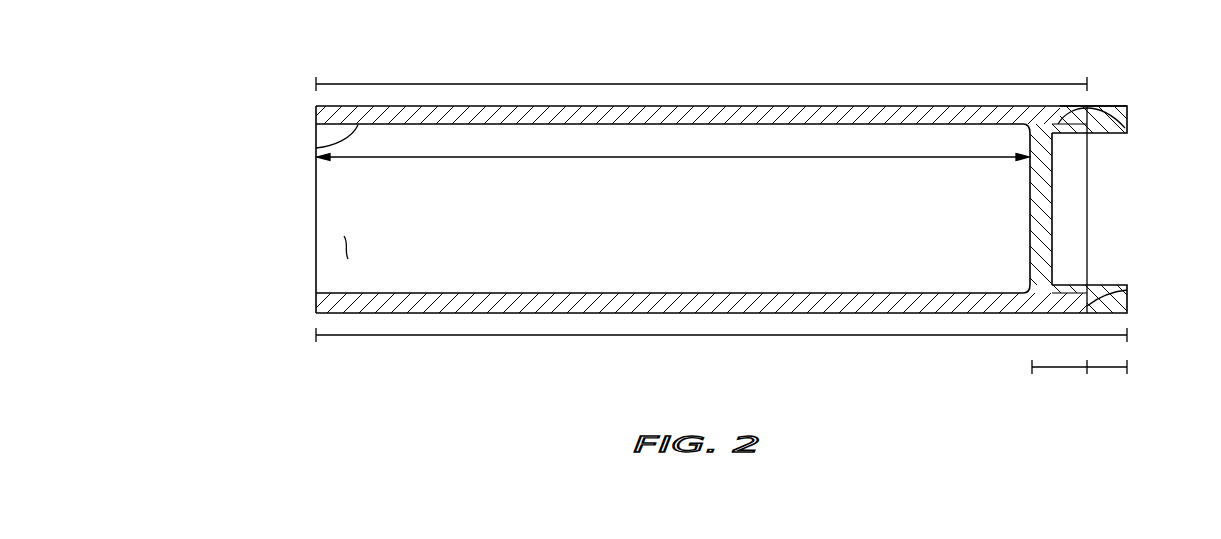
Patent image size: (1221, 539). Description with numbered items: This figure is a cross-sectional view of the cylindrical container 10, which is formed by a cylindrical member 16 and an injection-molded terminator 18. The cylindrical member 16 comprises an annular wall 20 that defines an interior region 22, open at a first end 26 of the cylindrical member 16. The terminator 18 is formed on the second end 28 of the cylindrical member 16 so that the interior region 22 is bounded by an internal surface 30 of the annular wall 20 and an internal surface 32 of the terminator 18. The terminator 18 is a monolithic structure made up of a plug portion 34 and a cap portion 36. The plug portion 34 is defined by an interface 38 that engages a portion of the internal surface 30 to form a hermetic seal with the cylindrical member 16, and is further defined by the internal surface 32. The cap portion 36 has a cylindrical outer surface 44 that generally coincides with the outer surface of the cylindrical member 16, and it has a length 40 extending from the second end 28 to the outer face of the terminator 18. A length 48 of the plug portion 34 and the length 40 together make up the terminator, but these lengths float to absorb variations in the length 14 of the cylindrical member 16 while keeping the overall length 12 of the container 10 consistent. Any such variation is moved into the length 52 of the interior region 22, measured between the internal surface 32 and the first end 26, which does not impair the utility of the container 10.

The cylindrical container 10 is at (705, 215).
The length of the container 12 is at (828, 336).
The length of the cylindrical member 14 is at (765, 84).
The cylindrical member 16 is at (304, 106).
The terminator 18 is at (1090, 215).
The annular wall 20 is at (316, 148).
The interior region 22 is at (342, 192).
The first end 26 is at (296, 315).
The second end 28 is at (1100, 86).
The internal surface of the annular wall 30 is at (340, 247).
The internal surface of the terminator 32 is at (1030, 204).
The plug portion 34 is at (1090, 182).
The cap portion 36 is at (1099, 262).
The interface 38 is at (1118, 124).
The length of the cap portion 40 is at (1100, 368).
The cylindrical outer surface 44 is at (1112, 103).
The length of the plug portion 48 is at (1060, 368).
The length of the interior region 52 is at (692, 158).